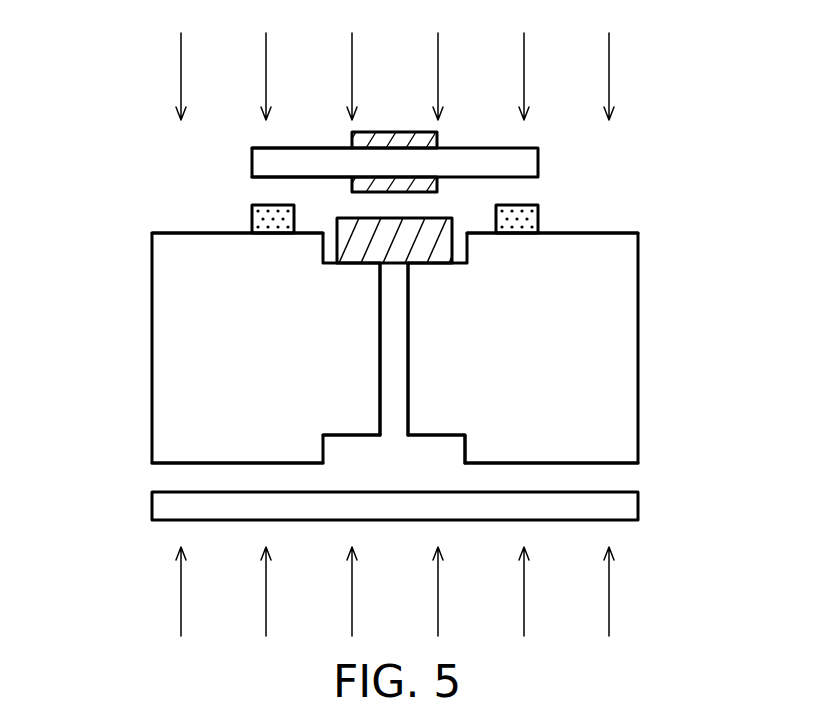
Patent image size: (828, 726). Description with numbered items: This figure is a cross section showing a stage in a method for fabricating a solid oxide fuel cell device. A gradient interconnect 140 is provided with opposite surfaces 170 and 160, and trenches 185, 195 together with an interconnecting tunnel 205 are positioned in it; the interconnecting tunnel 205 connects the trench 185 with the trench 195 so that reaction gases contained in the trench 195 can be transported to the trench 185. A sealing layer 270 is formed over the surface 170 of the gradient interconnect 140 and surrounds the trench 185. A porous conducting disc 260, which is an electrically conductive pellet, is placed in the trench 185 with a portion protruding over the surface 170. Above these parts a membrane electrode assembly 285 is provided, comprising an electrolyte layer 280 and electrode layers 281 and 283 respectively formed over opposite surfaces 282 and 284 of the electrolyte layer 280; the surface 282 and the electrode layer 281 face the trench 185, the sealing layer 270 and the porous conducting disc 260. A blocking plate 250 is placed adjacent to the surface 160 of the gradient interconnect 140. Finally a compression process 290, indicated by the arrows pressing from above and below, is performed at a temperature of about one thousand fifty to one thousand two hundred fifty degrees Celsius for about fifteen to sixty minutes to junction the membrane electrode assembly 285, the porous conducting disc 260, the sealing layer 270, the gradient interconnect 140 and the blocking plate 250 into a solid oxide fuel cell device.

The gradient interconnect 140 is at (135, 345).
The surface 160 is at (165, 466).
The surface 170 is at (174, 220).
The trench 185 is at (481, 253).
The trench 195 is at (479, 455).
The interconnecting tunnel 205 is at (421, 351).
The blocking plate 250 is at (615, 505).
The porous conducting disc 260 is at (362, 253).
The sealing layer 270 is at (520, 220).
The electrolyte layer 280 is at (512, 162).
The electrode layer 281 is at (440, 185).
The surface 282 is at (268, 184).
The electrode layer 283 is at (440, 140).
The surface 284 is at (276, 134).
The membrane electrode assembly 285 is at (465, 163).
The compression process 290 is at (609, 62).